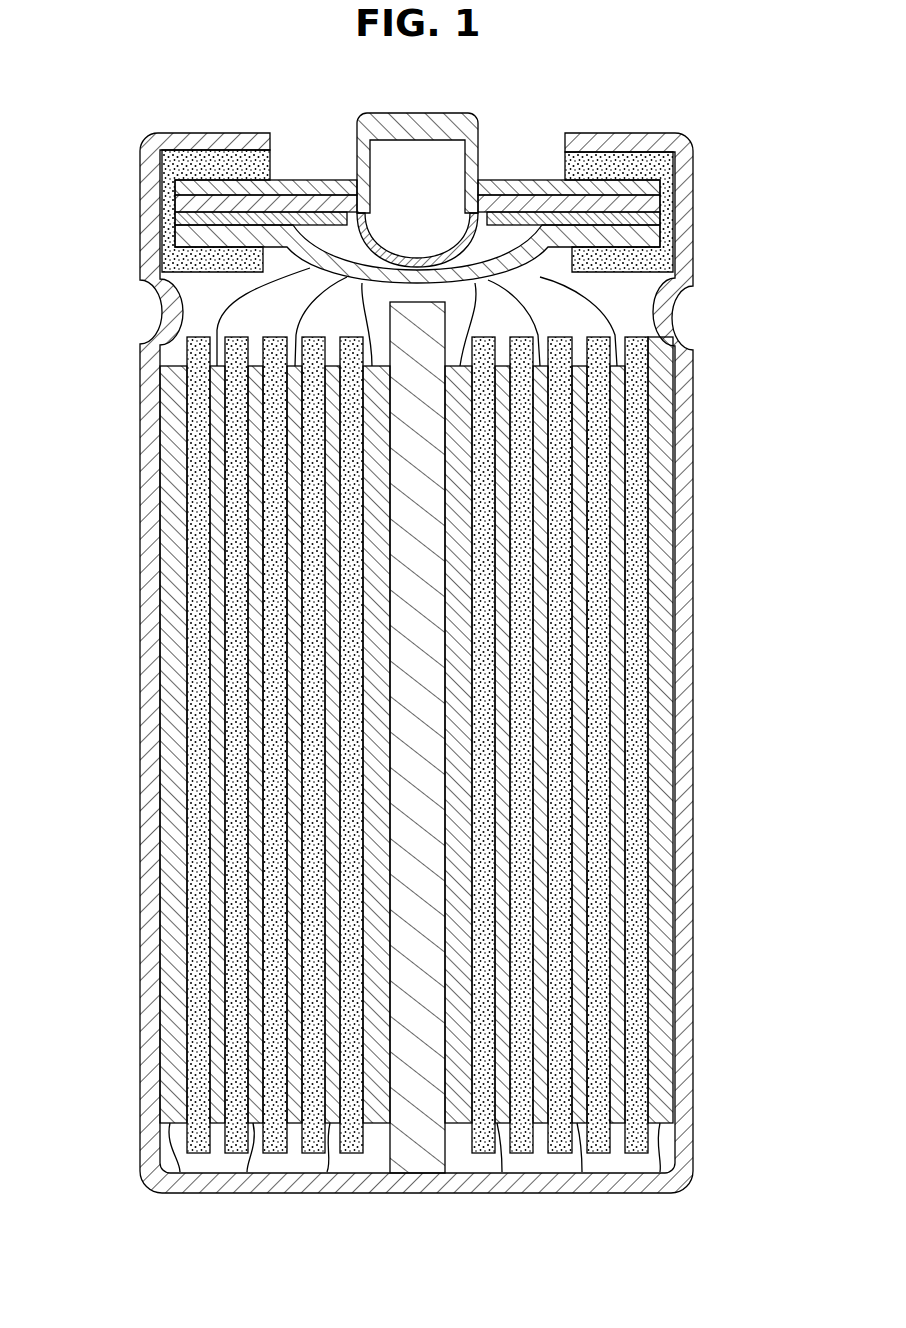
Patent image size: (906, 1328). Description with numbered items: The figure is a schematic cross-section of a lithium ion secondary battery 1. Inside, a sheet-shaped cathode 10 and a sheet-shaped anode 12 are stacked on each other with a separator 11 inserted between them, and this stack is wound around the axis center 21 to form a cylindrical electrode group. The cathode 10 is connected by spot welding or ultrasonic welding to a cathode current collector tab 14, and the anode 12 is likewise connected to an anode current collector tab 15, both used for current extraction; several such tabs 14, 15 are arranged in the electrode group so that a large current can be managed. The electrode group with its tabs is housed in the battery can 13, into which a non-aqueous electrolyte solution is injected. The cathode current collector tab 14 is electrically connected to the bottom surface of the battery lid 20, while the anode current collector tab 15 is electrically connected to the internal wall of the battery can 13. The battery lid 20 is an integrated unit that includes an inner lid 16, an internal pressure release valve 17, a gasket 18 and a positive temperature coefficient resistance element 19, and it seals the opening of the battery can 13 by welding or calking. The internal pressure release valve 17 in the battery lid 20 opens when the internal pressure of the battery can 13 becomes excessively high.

The lithium ion secondary battery 1 is at (267, 1215).
The cathode 10 is at (378, 917).
The separator 11 is at (488, 700).
The anode 12 is at (333, 952).
The battery can 13 is at (697, 492).
The cathode current collector tab 14 is at (475, 295).
The anode current collector tab 15 is at (505, 1168).
The inner lid 16 is at (630, 237).
The internal pressure release valve 17 is at (427, 250).
The gasket 18 is at (182, 166).
The positive temperature coefficient (PTC) resistance element 19 is at (180, 223).
The battery lid 20 is at (527, 180).
The axis center 21 is at (412, 1150).